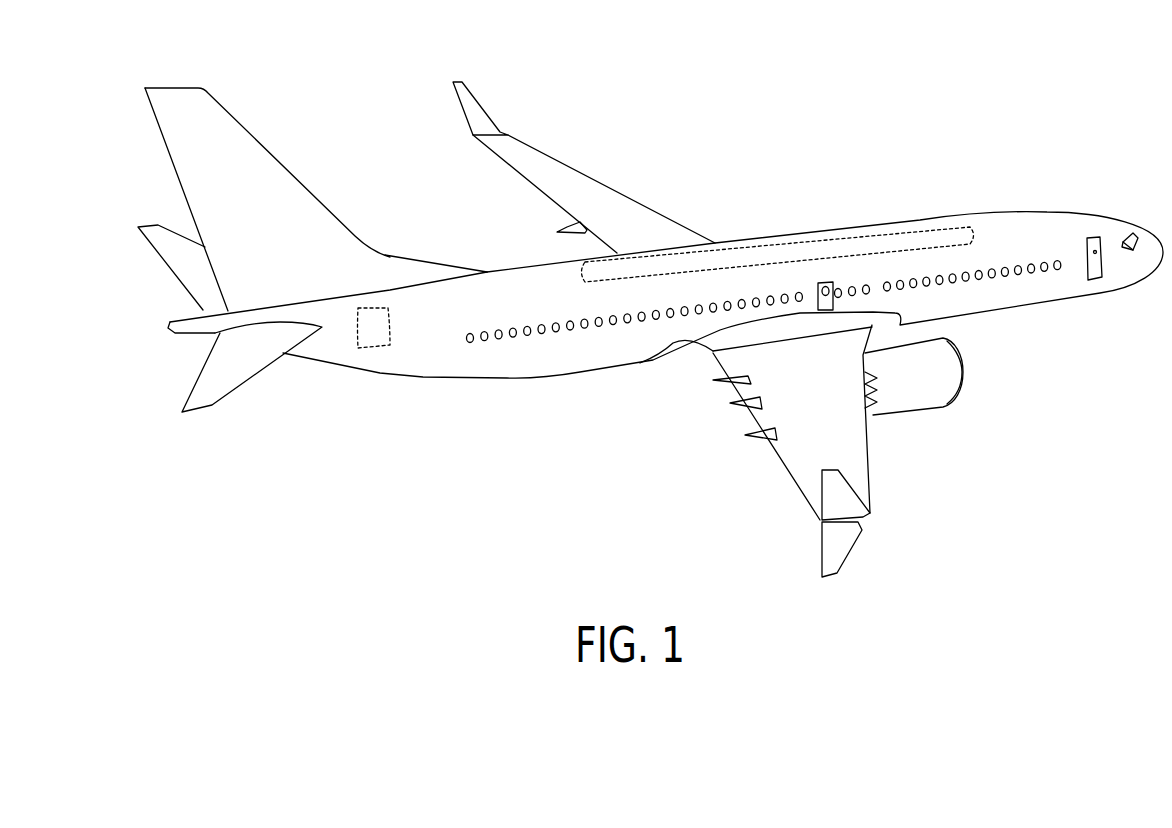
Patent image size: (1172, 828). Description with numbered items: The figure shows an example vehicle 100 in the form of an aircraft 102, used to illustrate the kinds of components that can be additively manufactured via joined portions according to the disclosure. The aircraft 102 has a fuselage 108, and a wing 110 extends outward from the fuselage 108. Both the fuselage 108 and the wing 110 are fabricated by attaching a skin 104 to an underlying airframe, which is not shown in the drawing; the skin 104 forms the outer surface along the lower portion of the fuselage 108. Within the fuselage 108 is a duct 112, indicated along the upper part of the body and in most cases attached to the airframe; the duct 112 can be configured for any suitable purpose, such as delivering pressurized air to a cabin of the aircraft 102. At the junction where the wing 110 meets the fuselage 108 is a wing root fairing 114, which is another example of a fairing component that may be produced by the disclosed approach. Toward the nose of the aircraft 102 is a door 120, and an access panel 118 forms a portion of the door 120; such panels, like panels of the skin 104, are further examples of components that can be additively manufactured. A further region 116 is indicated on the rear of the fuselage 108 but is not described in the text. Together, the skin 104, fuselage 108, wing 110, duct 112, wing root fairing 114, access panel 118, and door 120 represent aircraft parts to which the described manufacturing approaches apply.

The vehicle 100 is at (809, 131).
The aircraft 102 is at (997, 225).
The skin 104 is at (412, 363).
The fuselage 108 is at (539, 256).
The wing 110 is at (787, 458).
The duct 112 is at (748, 245).
The wing root fairing 114 is at (690, 357).
The access panel region 116 is at (377, 343).
The access panel 118 is at (1100, 287).
The door 120 is at (1093, 233).